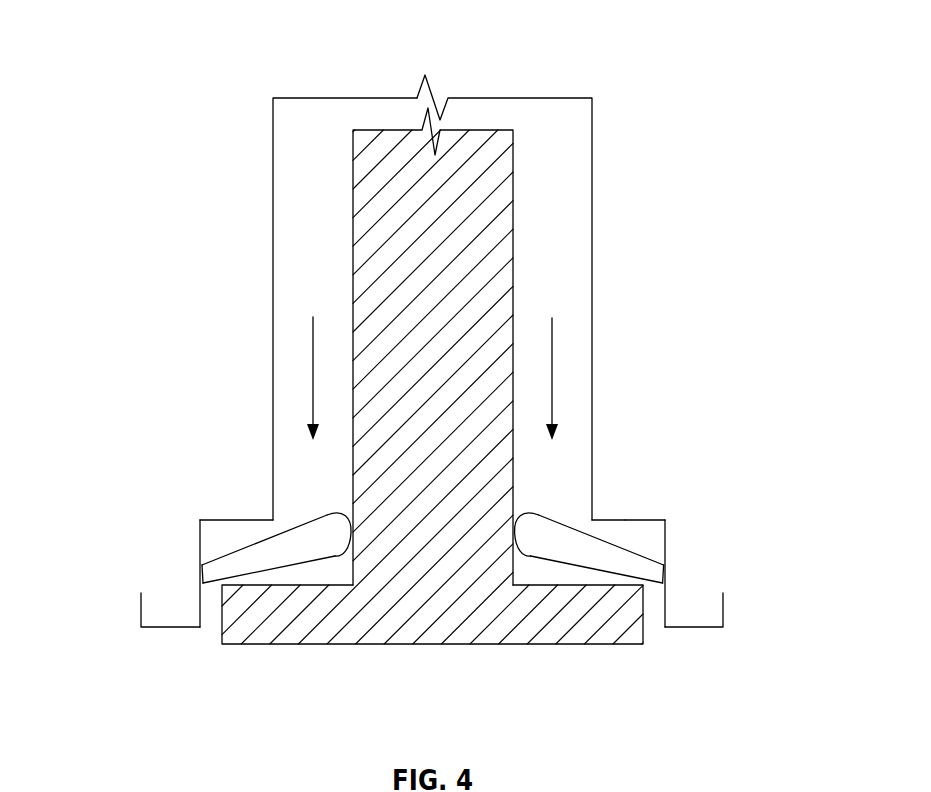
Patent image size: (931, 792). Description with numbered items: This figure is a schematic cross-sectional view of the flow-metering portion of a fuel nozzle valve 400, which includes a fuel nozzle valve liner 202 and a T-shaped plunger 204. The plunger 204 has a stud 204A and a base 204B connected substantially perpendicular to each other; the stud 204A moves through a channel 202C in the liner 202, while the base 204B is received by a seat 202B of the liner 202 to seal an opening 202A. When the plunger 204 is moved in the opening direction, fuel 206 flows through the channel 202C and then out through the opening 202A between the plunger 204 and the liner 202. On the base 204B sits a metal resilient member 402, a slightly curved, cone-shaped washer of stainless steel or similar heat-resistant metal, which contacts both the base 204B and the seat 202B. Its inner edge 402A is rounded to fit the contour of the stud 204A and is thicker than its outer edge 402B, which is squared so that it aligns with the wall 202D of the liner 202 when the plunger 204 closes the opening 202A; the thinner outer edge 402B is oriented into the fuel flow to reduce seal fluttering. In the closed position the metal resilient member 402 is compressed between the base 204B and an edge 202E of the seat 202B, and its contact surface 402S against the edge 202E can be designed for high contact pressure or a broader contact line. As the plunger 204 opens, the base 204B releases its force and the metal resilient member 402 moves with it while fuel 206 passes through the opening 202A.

The fuel nozzle valve 400 is at (139, 113).
The fuel nozzle valve liner 202 is at (593, 298).
The opening 202A is at (207, 623).
The seat 202B is at (657, 520).
The channel 202C is at (296, 249).
The wall 202D is at (200, 612).
The edge of the seat 202E is at (270, 517).
The plunger 204 is at (377, 645).
The stud 204A is at (392, 138).
The base 204B is at (465, 632).
The fuel 206 is at (308, 380).
The metal resilient member 402 is at (212, 556).
The inner edge 402A is at (338, 522).
The outer edge 402B is at (199, 580).
The contact surface 402S is at (293, 523).